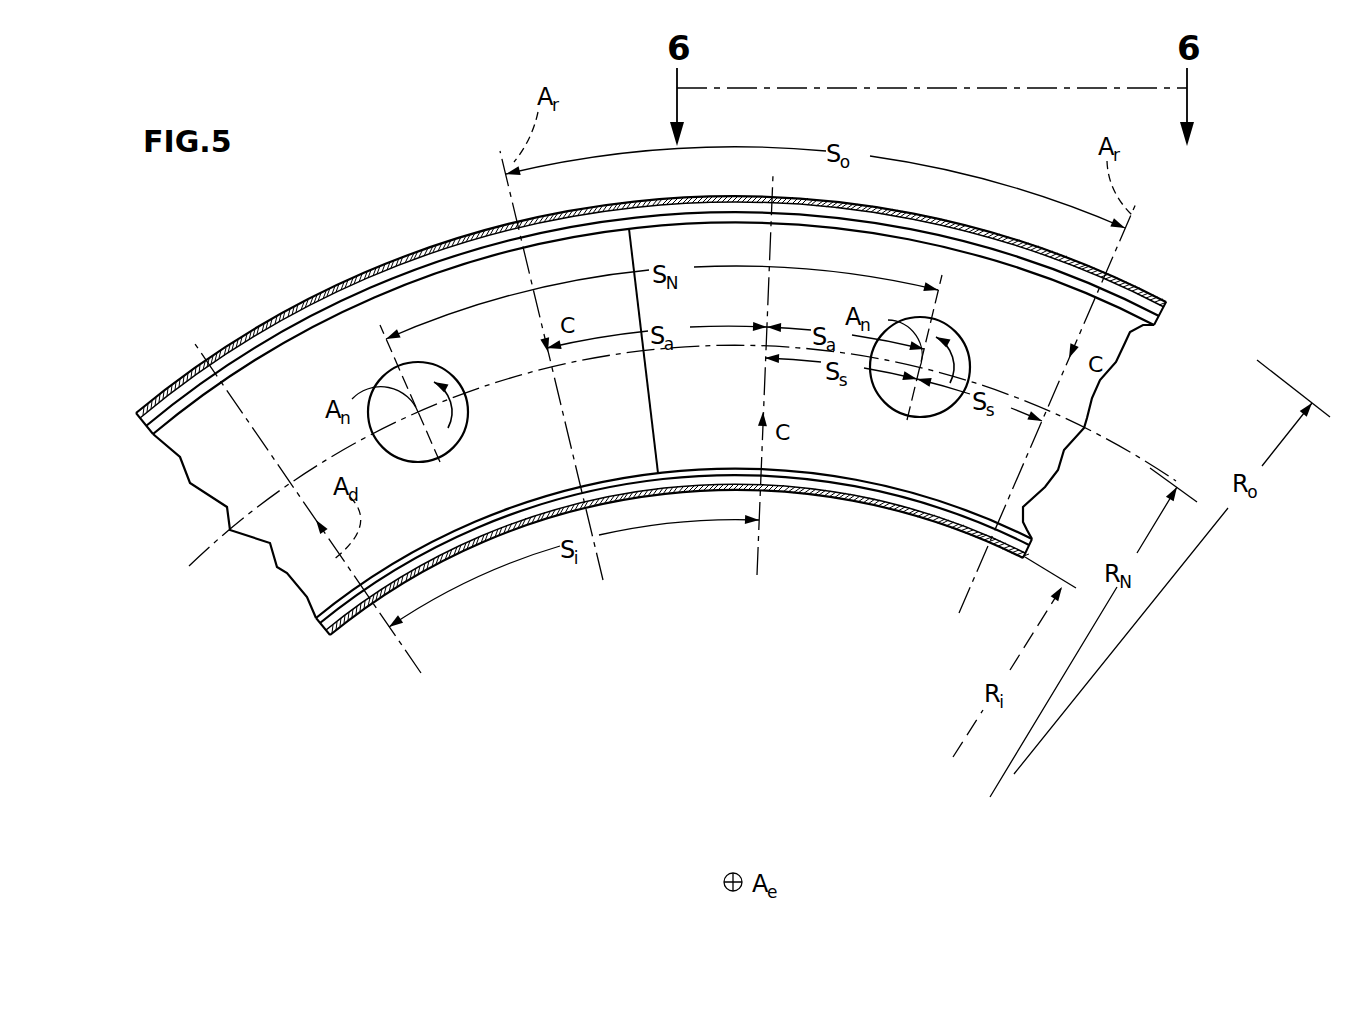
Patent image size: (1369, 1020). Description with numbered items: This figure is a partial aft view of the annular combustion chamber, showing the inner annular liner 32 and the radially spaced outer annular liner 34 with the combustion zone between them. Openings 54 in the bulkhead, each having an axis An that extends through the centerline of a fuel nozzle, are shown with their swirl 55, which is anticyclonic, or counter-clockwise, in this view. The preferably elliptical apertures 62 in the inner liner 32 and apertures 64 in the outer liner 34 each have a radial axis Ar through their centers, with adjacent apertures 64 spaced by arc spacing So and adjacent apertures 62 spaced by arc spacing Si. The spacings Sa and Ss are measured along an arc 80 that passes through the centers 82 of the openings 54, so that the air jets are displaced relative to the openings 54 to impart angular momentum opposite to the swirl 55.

The inner annular liner 32 is at (910, 520).
The outer annular liner 34 is at (935, 221).
The opening 54 is at (467, 412).
The swirl 55 is at (448, 392).
The aperture 62 is at (372, 606).
The aperture 64 is at (512, 232).
The arc 80 is at (217, 563).
The center 82 is at (418, 412).